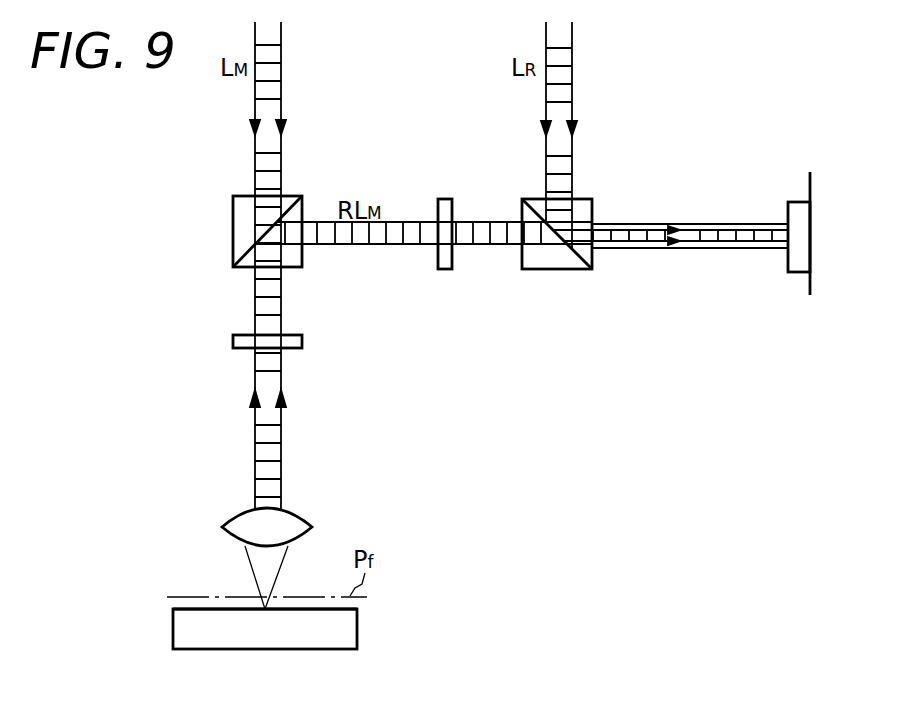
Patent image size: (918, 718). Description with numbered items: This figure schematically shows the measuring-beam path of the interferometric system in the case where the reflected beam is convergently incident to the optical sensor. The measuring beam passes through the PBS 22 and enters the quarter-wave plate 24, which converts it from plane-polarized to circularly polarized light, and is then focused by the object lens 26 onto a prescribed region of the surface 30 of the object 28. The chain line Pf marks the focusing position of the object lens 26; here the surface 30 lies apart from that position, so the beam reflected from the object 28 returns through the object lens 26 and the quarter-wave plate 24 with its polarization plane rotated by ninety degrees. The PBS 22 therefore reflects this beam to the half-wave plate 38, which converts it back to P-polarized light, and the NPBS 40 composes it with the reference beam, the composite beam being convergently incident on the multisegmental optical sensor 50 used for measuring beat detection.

The PBS 22 is at (238, 212).
The quarter-wave plate 24 is at (238, 342).
The object lens 26 is at (230, 520).
The object 28 is at (348, 630).
The surface 30 is at (195, 608).
The half-wave plate 38 is at (445, 198).
The NPBS 40 is at (540, 268).
The multisegmental optical sensor 50 is at (789, 185).